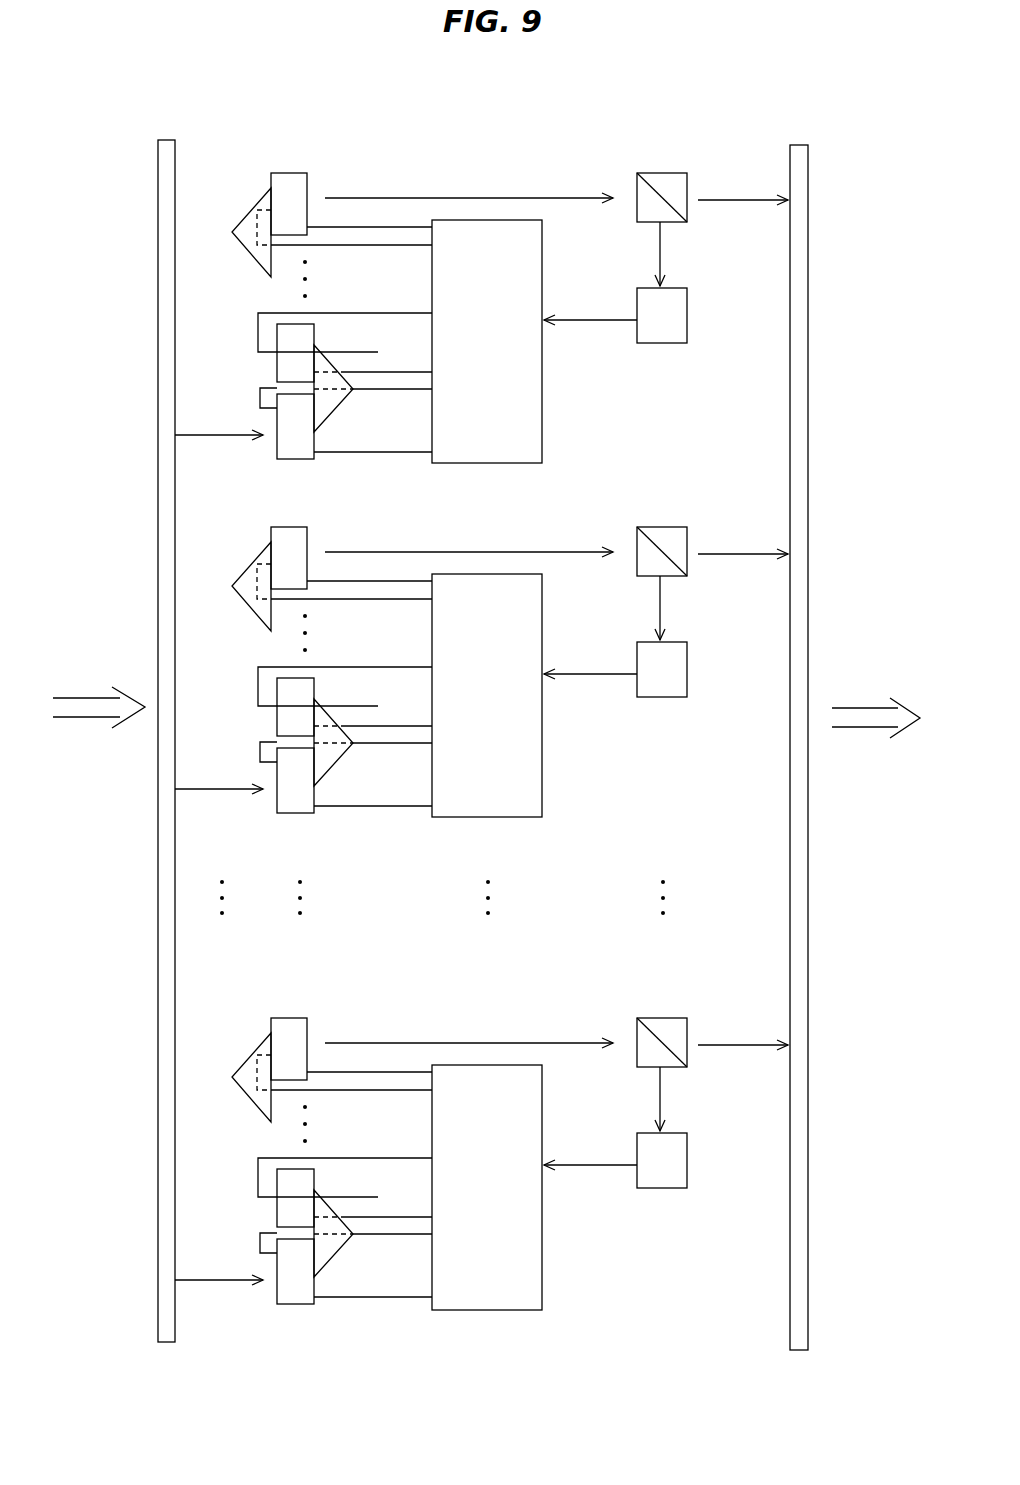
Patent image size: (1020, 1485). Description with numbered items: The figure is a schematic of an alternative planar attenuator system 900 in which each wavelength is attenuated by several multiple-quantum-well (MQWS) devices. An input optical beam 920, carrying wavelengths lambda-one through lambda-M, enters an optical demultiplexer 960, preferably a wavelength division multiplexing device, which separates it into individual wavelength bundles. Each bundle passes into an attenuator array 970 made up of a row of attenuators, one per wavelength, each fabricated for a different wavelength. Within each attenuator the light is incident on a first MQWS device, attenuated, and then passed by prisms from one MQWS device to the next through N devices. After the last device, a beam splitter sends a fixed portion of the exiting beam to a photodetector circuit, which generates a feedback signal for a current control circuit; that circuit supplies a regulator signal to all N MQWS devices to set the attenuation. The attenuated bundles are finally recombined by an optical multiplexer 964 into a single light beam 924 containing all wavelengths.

The attenuator system 900 is at (115, 85).
The attenuator array 970 is at (438, 140).
The input optical beam 920 is at (78, 718).
The single light beam 924 is at (855, 728).
The optical demultiplexer 960 is at (157, 375).
The optical multiplexer 964 is at (808, 402).